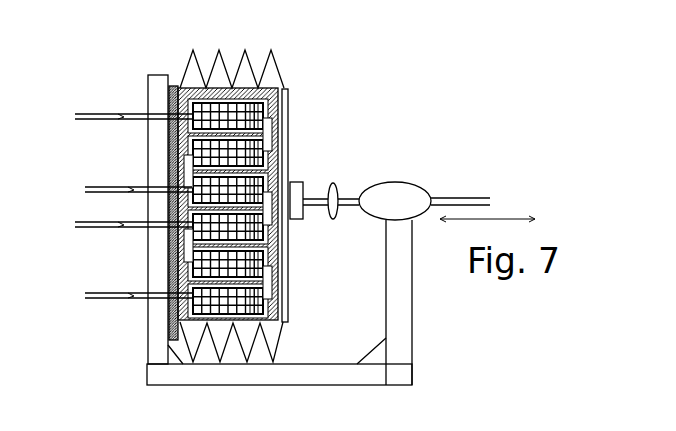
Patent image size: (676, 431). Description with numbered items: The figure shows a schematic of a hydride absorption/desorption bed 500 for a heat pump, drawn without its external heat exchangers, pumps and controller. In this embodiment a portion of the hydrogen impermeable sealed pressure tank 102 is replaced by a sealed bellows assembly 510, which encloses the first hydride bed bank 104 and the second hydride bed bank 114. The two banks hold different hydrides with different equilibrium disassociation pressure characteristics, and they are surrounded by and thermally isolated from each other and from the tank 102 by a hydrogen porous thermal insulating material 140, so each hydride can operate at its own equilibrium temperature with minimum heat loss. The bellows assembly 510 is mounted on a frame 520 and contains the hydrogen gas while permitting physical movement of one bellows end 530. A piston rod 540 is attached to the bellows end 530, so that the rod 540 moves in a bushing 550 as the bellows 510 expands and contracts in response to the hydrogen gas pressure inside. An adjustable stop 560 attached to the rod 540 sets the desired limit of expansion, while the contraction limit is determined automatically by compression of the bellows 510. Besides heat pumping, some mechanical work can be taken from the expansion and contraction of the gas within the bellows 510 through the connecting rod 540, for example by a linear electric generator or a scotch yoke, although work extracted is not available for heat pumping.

The hydride absorption/desorption bed 500 is at (140, 35).
The sealed pressure tank 102 is at (165, 101).
The second hydride bed bank 114 is at (275, 281).
The first hydride bed bank 104 is at (277, 163).
The sealed bellows assembly 510 is at (278, 63).
The thermal insulating material 140 is at (289, 91).
The bellows end 530 is at (290, 310).
The adjustable stop 560 is at (337, 185).
The bushing 550 is at (420, 186).
The piston rod 540 is at (479, 197).
The frame 520 is at (412, 322).